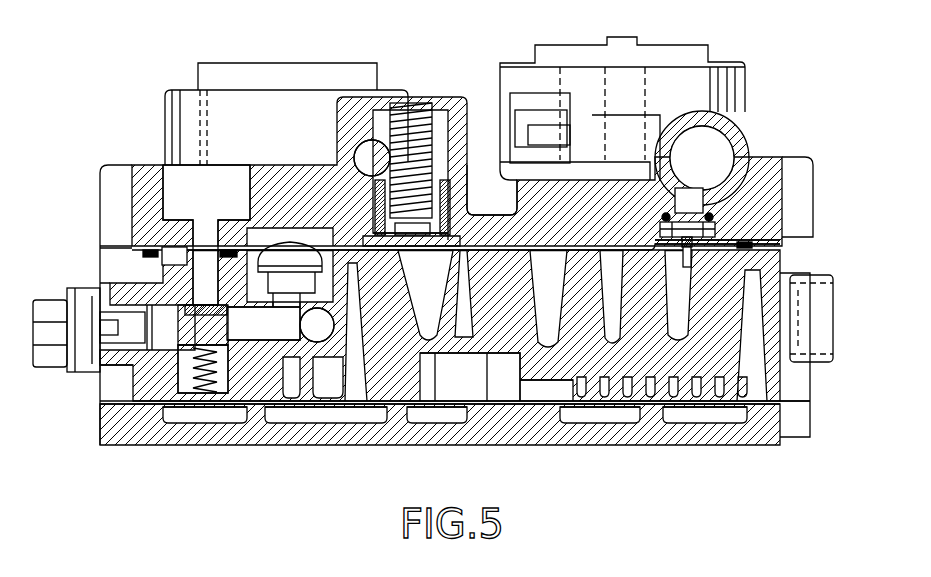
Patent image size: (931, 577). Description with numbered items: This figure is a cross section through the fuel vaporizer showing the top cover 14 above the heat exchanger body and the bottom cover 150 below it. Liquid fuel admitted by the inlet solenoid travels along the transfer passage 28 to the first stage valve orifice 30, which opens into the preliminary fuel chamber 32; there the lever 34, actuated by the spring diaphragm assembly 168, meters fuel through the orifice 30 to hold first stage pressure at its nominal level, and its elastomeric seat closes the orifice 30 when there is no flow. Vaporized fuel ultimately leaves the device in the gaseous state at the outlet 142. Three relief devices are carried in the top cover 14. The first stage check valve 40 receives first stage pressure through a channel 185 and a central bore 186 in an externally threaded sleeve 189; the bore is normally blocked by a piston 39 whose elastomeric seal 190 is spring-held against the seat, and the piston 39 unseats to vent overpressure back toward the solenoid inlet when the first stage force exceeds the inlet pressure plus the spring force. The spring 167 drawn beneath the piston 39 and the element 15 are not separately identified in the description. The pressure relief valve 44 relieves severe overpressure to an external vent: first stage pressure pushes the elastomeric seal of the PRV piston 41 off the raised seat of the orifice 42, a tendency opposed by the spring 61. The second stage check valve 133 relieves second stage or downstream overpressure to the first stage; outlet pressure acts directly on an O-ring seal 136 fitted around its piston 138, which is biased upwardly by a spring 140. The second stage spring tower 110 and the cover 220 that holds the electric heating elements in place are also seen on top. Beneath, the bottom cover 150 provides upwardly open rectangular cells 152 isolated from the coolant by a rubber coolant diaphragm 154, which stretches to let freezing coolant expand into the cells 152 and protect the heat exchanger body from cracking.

The top cover 14 is at (97, 220).
The base gasket 15 is at (340, 417).
The transfer passage 28 is at (290, 338).
The first stage valve orifice 30 is at (292, 318).
The preliminary fuel chamber 32 is at (255, 257).
The lever 34 is at (287, 240).
The piston 39 is at (185, 373).
The first stage check valve 40 is at (183, 238).
The pressure relief valve piston 41 is at (447, 207).
The orifice 42 is at (477, 197).
The pressure relief valve 44 is at (430, 88).
The spring 61 is at (405, 110).
The spring tower 110 is at (725, 62).
The second stage check valve 133 is at (687, 205).
The O-ring seal 136 is at (713, 218).
The piston 138 is at (712, 230).
The spring 140 is at (694, 248).
The gaseous fuel outlet 142 is at (703, 138).
The bottom cover 150 is at (507, 433).
The rectangular cells 152 is at (427, 420).
The rubber coolant diaphragm 154 is at (808, 400).
The spring 167 is at (217, 352).
The spring diaphragm assembly 168 is at (222, 62).
The channel 185 is at (242, 240).
The central bore 186 is at (205, 260).
The externally threaded sleeve 189 is at (182, 285).
The elastomeric seal 190 is at (267, 343).
The cover 220 is at (597, 97).